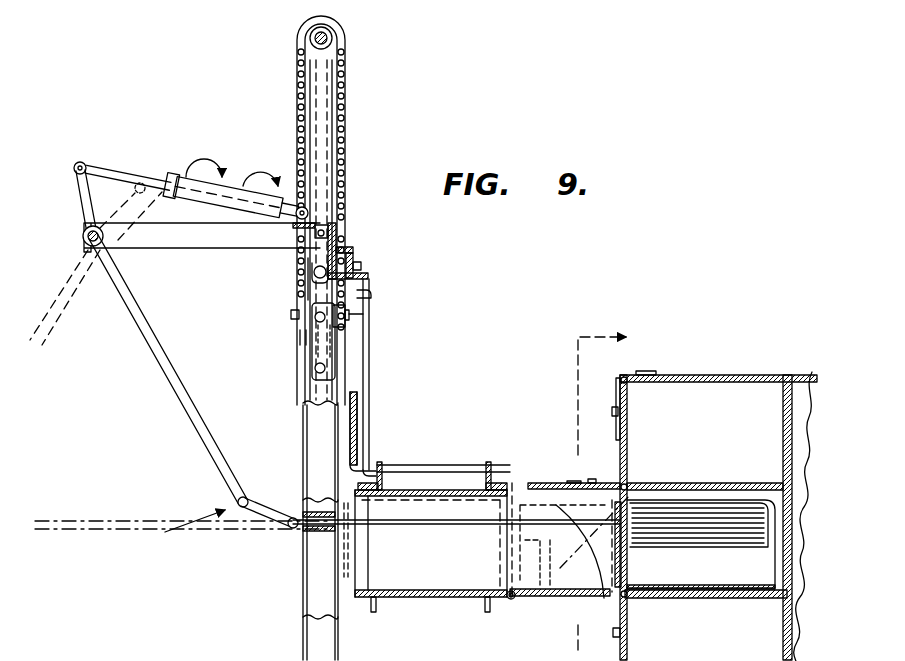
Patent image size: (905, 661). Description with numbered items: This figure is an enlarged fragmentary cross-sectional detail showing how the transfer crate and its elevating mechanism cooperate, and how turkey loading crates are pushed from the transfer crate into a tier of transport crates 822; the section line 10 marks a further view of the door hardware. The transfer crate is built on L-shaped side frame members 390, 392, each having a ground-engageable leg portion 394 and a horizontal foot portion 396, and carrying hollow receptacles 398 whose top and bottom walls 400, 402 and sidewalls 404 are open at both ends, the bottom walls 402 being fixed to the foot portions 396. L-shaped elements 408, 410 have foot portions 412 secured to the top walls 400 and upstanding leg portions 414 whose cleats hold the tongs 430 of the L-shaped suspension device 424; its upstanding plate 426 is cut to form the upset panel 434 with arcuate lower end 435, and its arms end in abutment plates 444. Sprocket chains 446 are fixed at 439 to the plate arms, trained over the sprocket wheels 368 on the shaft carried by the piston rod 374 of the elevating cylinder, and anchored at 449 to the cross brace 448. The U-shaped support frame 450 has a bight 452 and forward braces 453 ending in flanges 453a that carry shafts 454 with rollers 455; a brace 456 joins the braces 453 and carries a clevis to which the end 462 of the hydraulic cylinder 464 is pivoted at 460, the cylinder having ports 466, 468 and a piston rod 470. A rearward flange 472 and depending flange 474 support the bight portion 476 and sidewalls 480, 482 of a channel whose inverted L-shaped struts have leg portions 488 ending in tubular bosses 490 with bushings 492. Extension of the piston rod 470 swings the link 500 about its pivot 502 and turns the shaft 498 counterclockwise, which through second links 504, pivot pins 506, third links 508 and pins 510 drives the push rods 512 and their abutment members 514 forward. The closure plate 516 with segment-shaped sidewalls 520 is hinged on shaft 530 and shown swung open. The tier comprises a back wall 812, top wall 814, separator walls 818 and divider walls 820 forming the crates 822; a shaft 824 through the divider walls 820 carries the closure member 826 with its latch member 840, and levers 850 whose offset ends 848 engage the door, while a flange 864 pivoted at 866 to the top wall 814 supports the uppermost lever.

The section line 10 is at (602, 496).
The sprocket wheels 368 is at (334, 37).
The piston rod 374 is at (330, 150).
The side frame member 390 is at (364, 606).
The side frame member 392 is at (491, 614).
The ground-engageable leg portion 394 is at (373, 612).
The horizontal foot portion 396 is at (360, 600).
The receptacles 398 is at (416, 600).
The top wall 400 is at (418, 500).
The bottom wall 402 is at (449, 596).
The sidewall 404 is at (433, 553).
The L-shaped element 408 is at (364, 490).
The L-shaped element 410 is at (480, 478).
The foot portion 412 is at (368, 492).
The upstanding leg portion 414 is at (380, 482).
The L-shaped suspension device 424 is at (382, 392).
The upstanding plate 426 is at (370, 442).
The tongs 430 is at (440, 464).
The upset panel 434 is at (360, 422).
The arcuately-shaped lower end 435 is at (322, 467).
The chain attachment 439 is at (350, 318).
The abutment plate 444 is at (372, 295).
The sprocket chains 446 is at (345, 100).
The cross brace 448 is at (303, 332).
The chain connection 449 is at (291, 315).
The U-shaped support frame 450 is at (225, 258).
The bight 452 is at (310, 276).
The braces 453 is at (175, 250).
The downwardly-projecting flange 453a is at (312, 268).
The shafts 454 is at (330, 230).
The rollers 455 is at (312, 376).
The brace 456 is at (295, 228).
The pivot connection 460 is at (308, 210).
The cylinder end 462 is at (289, 194).
The hydraulic cylinder 464 is at (228, 181).
The port 466 is at (178, 178).
The port 468 is at (252, 207).
The piston rod 470 is at (146, 174).
The flange 472 is at (337, 240).
The downwardly-depending flange 474 is at (350, 256).
The bight portion 476 is at (369, 276).
The sidewall 480 is at (362, 264).
The sidewall 482 is at (371, 286).
The mast 488 is at (303, 433).
The tubular bosses 490 is at (294, 545).
The tubular bushings 492 is at (312, 550).
The shaft 498 is at (96, 264).
The link 500 is at (84, 205).
The pivot 502 is at (80, 161).
The second links 504 is at (156, 372).
The pivot pin 506 is at (240, 508).
The third links 508 is at (258, 514).
The pins 510 is at (291, 517).
The push rod 512 is at (395, 536).
The abutment members 514 is at (600, 546).
The closure plate 516 is at (589, 600).
The segment-shaped sidewall 520 is at (565, 600).
The shaft 530 is at (534, 612).
The back wall 812 is at (792, 460).
The top wall 814 is at (736, 374).
The separator walls 818 is at (736, 484).
The divider walls 820 is at (782, 378).
The transport crates 822 is at (712, 388).
The shaft 824 is at (630, 490).
The closure member 826 is at (628, 462).
The L-shaped latch member 840 is at (611, 416).
The offset ends 848 is at (701, 507).
The levers 850 is at (616, 400).
The flange 864 is at (641, 371).
The pivot connection 866 is at (655, 370).